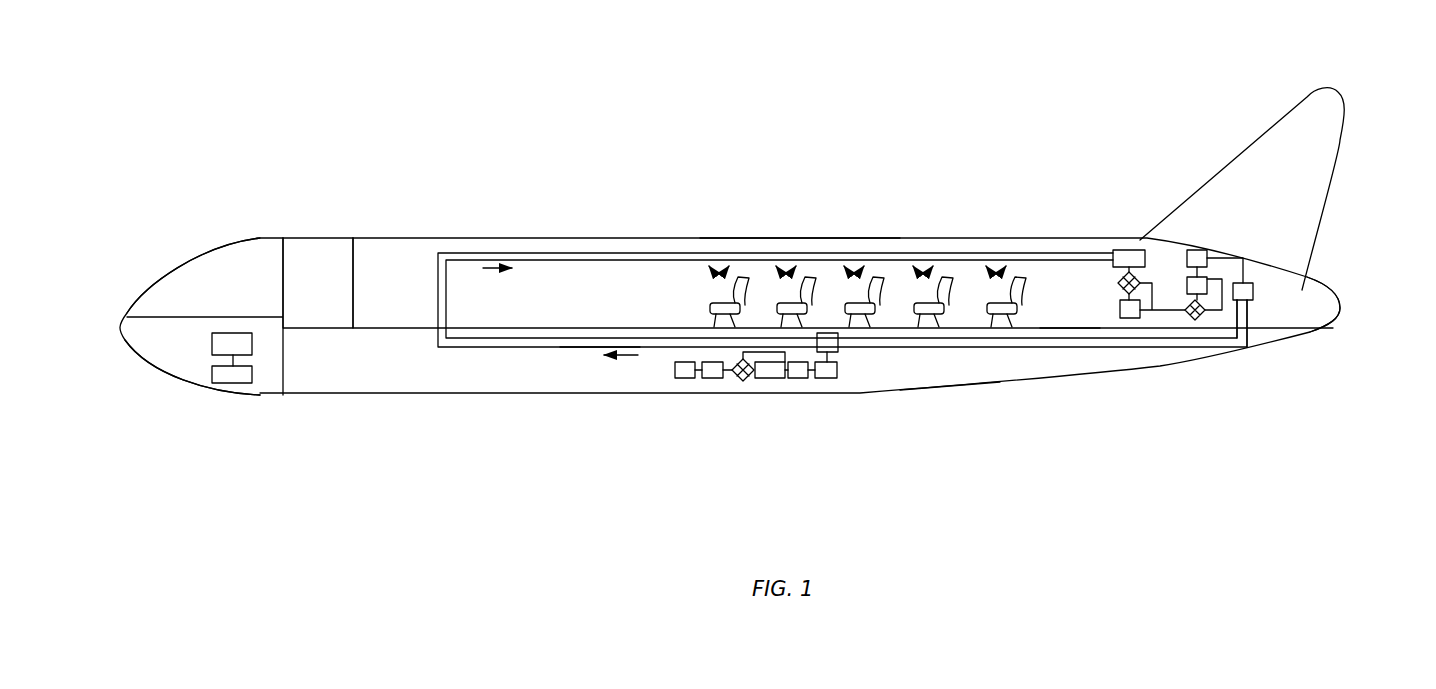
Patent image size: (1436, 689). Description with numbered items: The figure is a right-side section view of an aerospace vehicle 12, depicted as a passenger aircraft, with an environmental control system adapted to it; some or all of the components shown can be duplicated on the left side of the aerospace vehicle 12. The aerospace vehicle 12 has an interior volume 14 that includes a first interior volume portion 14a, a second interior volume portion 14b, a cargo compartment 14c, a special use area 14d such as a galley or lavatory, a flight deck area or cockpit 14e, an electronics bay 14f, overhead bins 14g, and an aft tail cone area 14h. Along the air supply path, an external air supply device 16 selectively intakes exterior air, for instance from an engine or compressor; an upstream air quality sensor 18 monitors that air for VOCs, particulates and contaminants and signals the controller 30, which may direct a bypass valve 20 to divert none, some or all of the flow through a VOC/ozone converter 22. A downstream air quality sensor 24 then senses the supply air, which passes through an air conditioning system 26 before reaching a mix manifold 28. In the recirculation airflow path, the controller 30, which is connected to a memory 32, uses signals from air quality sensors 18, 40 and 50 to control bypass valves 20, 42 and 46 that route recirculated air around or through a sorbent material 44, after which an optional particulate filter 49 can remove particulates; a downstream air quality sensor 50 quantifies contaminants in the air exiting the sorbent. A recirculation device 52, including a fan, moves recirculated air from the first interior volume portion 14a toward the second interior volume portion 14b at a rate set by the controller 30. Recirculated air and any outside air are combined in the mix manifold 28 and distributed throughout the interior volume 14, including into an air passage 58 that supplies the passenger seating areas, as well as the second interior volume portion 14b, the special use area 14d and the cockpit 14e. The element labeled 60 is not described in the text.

The aerospace vehicle 12 is at (450, 70).
The interior volume 14 is at (592, 278).
The first interior volume portion 14a is at (1068, 292).
The second interior volume portion 14b is at (596, 310).
The cargo compartment 14c is at (945, 370).
The special use area 14d is at (320, 265).
The flight deck area or cockpit 14e is at (195, 292).
The electronics bay 14f is at (186, 361).
The overhead bins 14g is at (810, 240).
The aft tail cone area 14h is at (1310, 305).
The external air supply device 16 is at (683, 378).
The upstream air quality sensor 18 is at (712, 378).
The bypass valve 20 is at (742, 380).
The VOC/ozone converter 22 is at (772, 380).
The downstream air quality sensor 24 is at (808, 380).
The air conditioning system 26 is at (835, 378).
The mix manifold 28 is at (838, 352).
The controller 30 is at (212, 343).
The memory 32 is at (212, 376).
The air quality sensor 40 is at (1117, 250).
The bypass valve 42 is at (1118, 283).
The sorbent material 44 is at (1120, 316).
The bypass valve 46 is at (1247, 350).
The particulate filter 49 is at (1185, 282).
The downstream air quality sensor 50 is at (1198, 250).
The recirculation device 52 is at (1255, 290).
The air passage 58 is at (652, 258).
The recirculation valve 60 is at (1198, 320).